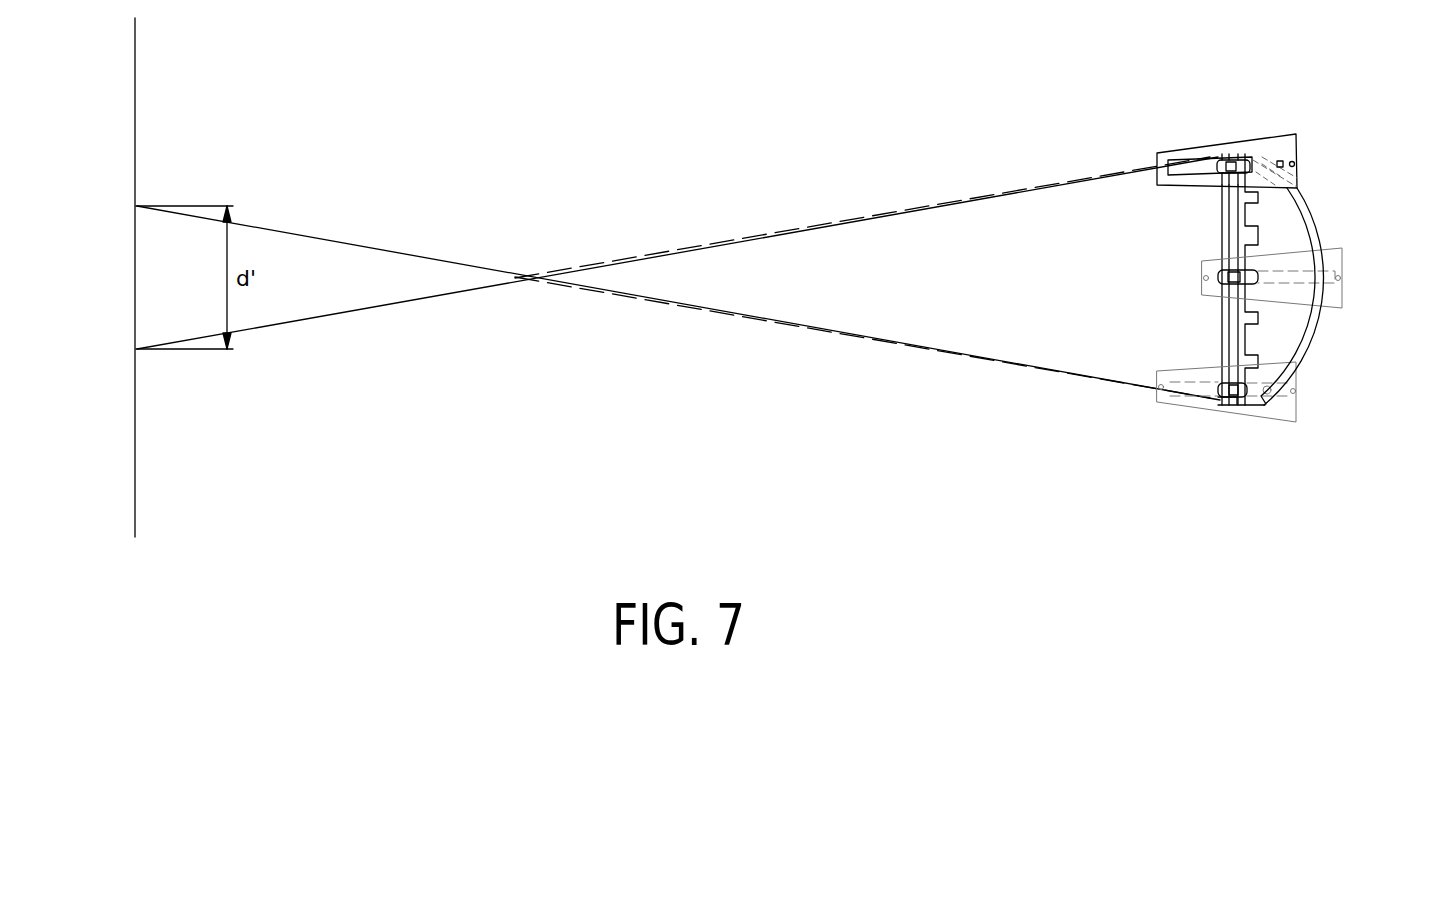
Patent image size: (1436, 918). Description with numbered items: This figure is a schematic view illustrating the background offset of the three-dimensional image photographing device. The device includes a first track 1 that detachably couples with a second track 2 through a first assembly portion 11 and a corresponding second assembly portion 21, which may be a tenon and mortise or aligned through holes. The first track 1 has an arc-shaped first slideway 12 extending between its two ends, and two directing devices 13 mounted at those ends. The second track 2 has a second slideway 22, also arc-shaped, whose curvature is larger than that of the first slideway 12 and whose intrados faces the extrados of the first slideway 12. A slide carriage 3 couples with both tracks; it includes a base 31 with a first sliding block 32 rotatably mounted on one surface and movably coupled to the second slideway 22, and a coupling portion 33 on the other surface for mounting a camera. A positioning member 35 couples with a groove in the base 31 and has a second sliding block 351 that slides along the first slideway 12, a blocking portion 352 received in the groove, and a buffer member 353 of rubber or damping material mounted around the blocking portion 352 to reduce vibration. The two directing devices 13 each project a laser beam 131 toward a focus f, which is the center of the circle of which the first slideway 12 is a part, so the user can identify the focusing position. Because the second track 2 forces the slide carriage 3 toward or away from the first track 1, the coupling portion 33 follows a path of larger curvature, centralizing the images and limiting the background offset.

The first track 1 is at (1223, 318).
The first assembly portion 11 is at (1260, 234).
The first slideway 12 is at (1230, 338).
The directing device 13 is at (1225, 406).
The laser beam 131 is at (792, 230).
The second track 2 is at (1322, 296).
The second assembly portion 21 is at (1306, 257).
The second slideway 22 is at (1303, 330).
The slide carriage 3 is at (1199, 177).
The base 31 is at (1176, 152).
The first sliding block 32 is at (1300, 180).
The coupling portion 33 is at (1282, 162).
The positioning member 35 is at (1093, 197).
The second sliding block 351 is at (1222, 208).
The blocking portion 352 is at (1230, 170).
The buffer member 353 is at (1227, 160).
The focus f is at (548, 278).